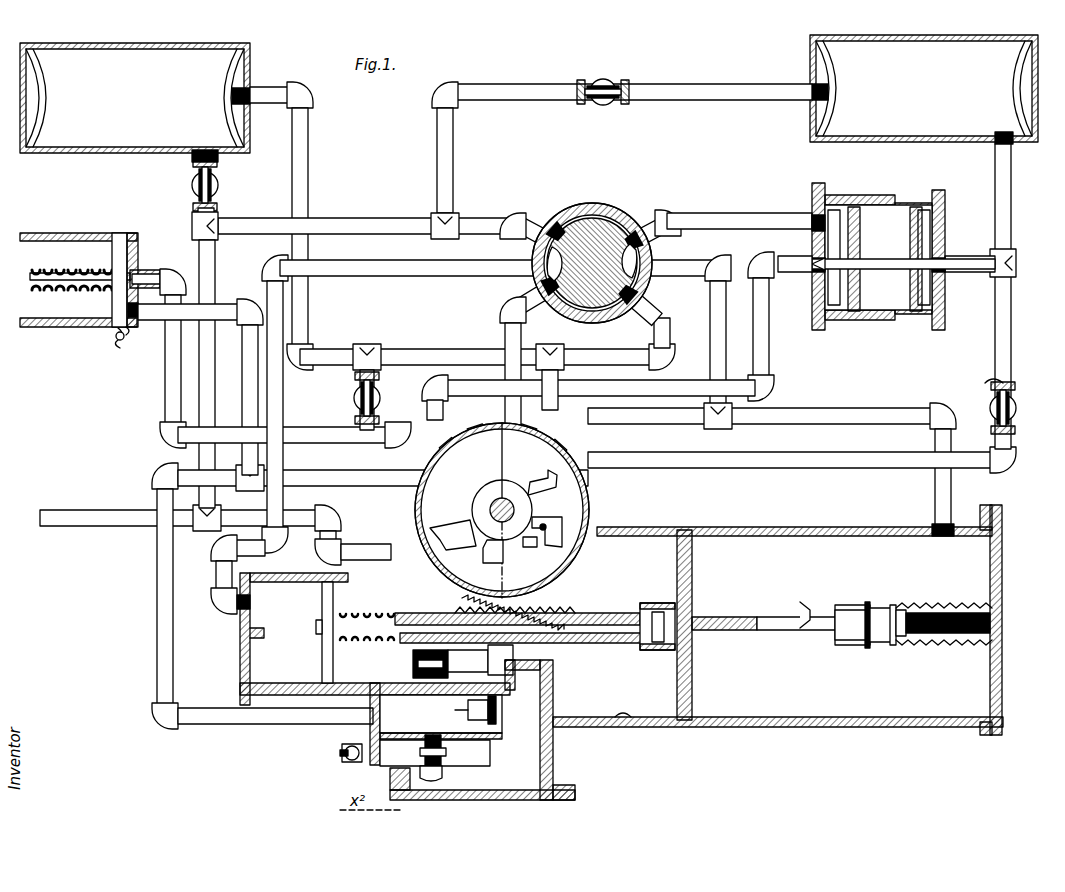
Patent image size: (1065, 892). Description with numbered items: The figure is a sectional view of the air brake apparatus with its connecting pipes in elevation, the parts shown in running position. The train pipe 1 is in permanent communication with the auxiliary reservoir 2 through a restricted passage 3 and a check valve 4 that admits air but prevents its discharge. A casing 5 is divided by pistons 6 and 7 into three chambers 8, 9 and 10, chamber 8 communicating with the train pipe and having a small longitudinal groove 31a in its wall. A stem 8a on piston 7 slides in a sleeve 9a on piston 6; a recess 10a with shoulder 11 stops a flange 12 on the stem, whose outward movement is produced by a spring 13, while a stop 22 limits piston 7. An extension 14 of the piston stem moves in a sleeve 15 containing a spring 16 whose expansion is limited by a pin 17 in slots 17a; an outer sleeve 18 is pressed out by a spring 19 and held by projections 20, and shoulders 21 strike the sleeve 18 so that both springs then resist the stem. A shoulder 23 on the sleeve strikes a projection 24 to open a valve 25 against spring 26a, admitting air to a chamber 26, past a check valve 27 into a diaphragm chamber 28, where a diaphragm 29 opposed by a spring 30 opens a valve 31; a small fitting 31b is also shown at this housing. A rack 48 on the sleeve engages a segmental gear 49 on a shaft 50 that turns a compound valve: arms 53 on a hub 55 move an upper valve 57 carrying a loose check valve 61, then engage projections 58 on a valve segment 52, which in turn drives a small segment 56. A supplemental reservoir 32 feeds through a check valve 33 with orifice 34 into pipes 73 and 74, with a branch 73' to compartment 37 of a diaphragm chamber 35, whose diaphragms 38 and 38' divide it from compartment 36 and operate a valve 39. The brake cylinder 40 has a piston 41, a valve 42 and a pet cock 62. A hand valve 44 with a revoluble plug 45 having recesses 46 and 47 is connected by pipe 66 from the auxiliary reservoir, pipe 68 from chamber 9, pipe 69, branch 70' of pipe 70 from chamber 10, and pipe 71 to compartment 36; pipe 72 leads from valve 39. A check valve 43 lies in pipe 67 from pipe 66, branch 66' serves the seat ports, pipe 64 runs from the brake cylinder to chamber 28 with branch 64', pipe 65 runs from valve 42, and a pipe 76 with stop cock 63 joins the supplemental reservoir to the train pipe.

The train pipe 1 is at (380, 200).
The auxiliary reservoir 2 is at (135, 102).
The restricted passage 3 is at (192, 208).
The check valve 4 is at (218, 180).
The casing 5 is at (310, 696).
The piston 6 is at (692, 658).
The piston 7 is at (322, 657).
The chamber 8 is at (778, 627).
The stem 8a is at (410, 646).
The chamber 9 is at (375, 639).
The sleeve 9a is at (606, 612).
The chamber 10 is at (839, 620).
The recess 10a is at (658, 612).
The shoulder 11 is at (645, 605).
The flange 12 is at (633, 645).
The spring 13 is at (367, 641).
The extension of the stem of piston 6 14 is at (726, 617).
The sleeve 15 is at (908, 636).
The spring 16 is at (940, 634).
The pin 17 is at (886, 642).
The slots 17a is at (908, 606).
The sleeve 18 is at (850, 606).
The spring 19 is at (948, 606).
The projections 20 is at (875, 604).
The shoulders 21 is at (804, 628).
The stop 22 is at (260, 634).
The shoulder 23 is at (520, 648).
The projection 24 is at (468, 657).
The valve 25 is at (500, 659).
The chamber 26 is at (472, 730).
The spring 26a is at (430, 663).
The check valve 27 is at (510, 720).
The diaphragm chamber 28 is at (441, 717).
The diaphragm 29 is at (468, 711).
The spring 30 is at (441, 748).
The valve 31 is at (440, 776).
The longitudinal groove 31a is at (623, 722).
The cock 31b is at (348, 758).
The supplemental reservoir 32 is at (924, 89).
The check valve 33 is at (1018, 404).
The orifice 34 is at (988, 384).
The diaphragm chamber 35 is at (872, 320).
The compartment 36 is at (838, 257).
The compartment 37 is at (934, 288).
The diaphragm 38 is at (892, 259).
The diaphragm 38' is at (863, 259).
The valve 39 is at (806, 276).
The brake cylinder 40 is at (62, 327).
The piston 41 is at (118, 240).
The valve 42 is at (142, 272).
The check valve 43 is at (355, 404).
The hand valve 44 is at (600, 222).
The revoluble plug 45 is at (585, 232).
The recess 46 is at (630, 255).
The recess 47 is at (556, 254).
The rack 48 is at (580, 612).
The segmental gear 49 is at (562, 592).
The shaft 50 is at (502, 498).
The valve segment 52 is at (453, 535).
The valve operating arms 53 is at (513, 521).
The hub 55 is at (493, 510).
The small segment 56 is at (491, 499).
The upper valve 57 is at (526, 557).
The projections 58 is at (442, 523).
The loose check valve 61 is at (547, 527).
The pet cock 62 is at (120, 345).
The stop cock 63 is at (610, 80).
The pipe 64 is at (243, 484).
The branch pipe 64' is at (383, 469).
The pipe 65 is at (166, 391).
The pipe 66 is at (462, 226).
The branch pipe 66' is at (551, 400).
The pipe 67 is at (360, 492).
The pipe 68 is at (436, 276).
The pipe 69 is at (505, 335).
The pipe 70 is at (745, 457).
The branch pipe 70' is at (700, 357).
The pipe 71 is at (730, 214).
The pipe 72 is at (428, 390).
The pipe 73 is at (1015, 296).
The branch pipe 73' is at (970, 251).
The pipe 74 is at (850, 462).
The pipe 76 is at (705, 100).